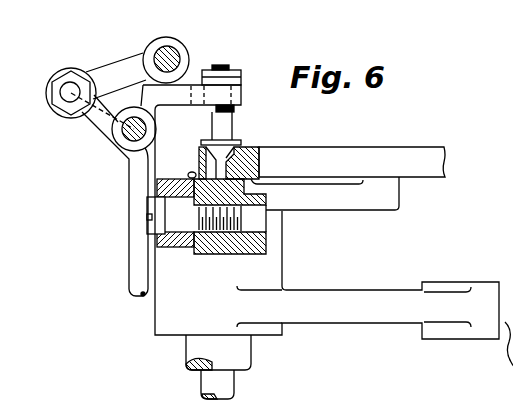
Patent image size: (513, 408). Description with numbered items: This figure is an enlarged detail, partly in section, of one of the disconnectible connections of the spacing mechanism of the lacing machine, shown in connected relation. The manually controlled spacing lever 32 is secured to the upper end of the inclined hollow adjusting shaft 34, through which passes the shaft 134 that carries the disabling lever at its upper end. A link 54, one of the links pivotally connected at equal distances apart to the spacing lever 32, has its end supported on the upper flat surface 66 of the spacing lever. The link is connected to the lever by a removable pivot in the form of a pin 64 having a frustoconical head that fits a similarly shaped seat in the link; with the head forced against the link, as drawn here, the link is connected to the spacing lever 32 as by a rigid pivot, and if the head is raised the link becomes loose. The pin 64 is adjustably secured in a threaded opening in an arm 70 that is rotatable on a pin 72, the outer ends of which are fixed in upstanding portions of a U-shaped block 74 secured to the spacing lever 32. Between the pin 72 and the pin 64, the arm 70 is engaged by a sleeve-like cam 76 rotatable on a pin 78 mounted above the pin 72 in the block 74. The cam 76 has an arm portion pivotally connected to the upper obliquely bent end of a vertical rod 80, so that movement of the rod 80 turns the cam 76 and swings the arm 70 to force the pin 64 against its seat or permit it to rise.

The spacing lever 32 is at (358, 209).
The adjusting shaft 34 is at (248, 352).
The link 54 is at (292, 144).
The pin 64 is at (232, 122).
The upper flat surface 66 is at (188, 173).
The arm 70 is at (153, 103).
The pin 72 is at (118, 131).
The U-shaped block 74 is at (190, 66).
The sleeve-like cam 76 is at (185, 52).
The pin 78 is at (152, 46).
The vertical rod 80 is at (125, 258).
The shaft 134 is at (225, 385).